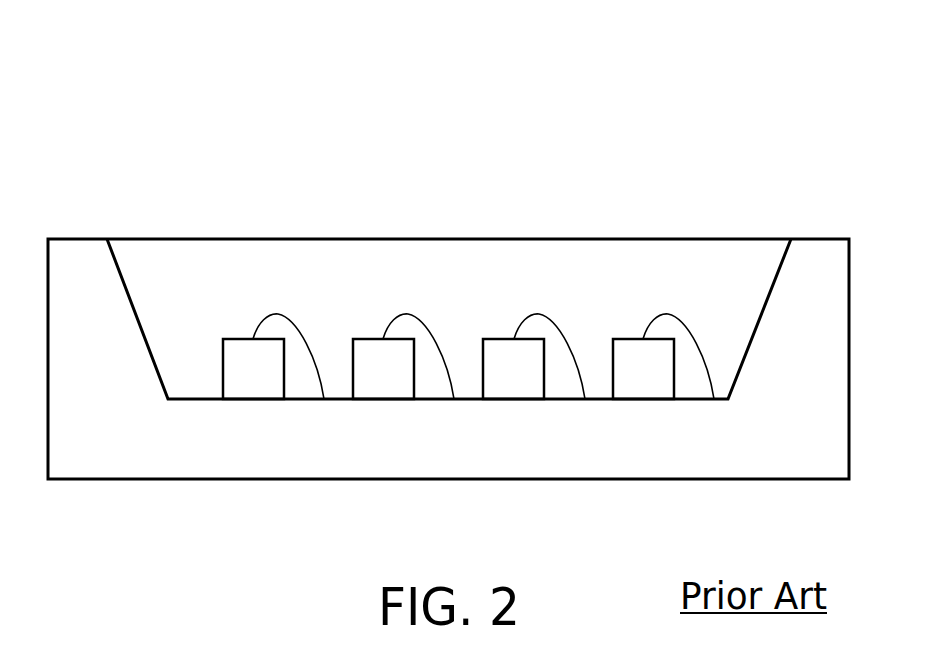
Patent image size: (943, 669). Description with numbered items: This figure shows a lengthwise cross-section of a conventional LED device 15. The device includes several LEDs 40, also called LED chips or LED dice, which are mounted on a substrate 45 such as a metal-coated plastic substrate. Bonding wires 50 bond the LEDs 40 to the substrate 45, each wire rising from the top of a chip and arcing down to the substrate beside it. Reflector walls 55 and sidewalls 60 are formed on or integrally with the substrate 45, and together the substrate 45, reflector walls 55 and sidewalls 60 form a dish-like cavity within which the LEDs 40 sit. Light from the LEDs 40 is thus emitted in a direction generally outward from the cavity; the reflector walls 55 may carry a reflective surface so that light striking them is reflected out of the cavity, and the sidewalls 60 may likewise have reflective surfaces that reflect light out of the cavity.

The conventional LED device 15 is at (249, 101).
The LEDs 40 is at (249, 389).
The substrate 45 is at (588, 458).
The bonding wires 50 is at (560, 327).
The reflector walls 55 is at (468, 270).
The sidewalls 60 is at (78, 275).